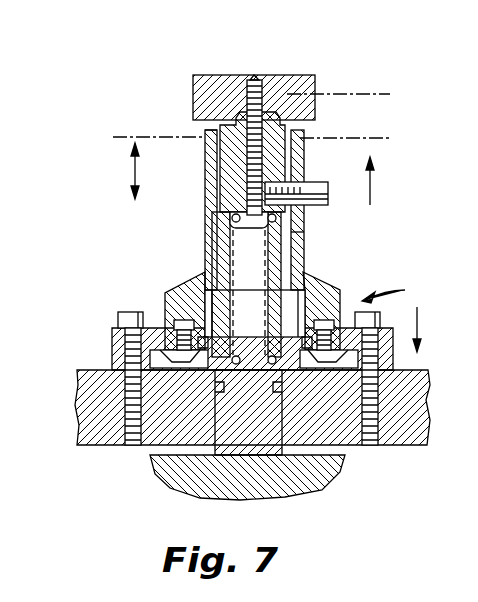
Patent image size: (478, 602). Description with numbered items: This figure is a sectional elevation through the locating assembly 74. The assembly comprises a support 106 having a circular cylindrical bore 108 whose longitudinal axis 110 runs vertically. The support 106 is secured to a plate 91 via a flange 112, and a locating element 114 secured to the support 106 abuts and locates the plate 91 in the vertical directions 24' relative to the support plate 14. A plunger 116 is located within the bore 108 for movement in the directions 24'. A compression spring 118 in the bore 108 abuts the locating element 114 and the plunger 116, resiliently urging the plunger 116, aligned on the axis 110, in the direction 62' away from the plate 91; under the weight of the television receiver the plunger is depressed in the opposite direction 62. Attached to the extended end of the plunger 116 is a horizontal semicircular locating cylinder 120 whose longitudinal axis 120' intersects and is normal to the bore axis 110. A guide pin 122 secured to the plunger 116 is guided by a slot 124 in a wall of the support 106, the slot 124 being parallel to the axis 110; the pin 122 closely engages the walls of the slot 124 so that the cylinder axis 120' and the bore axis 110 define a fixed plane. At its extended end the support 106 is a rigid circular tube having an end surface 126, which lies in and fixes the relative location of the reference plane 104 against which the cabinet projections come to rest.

The support plate 14 is at (150, 462).
The vertical directions 24' is at (117, 171).
The direction 62 is at (431, 329).
The direction 62' is at (391, 181).
The locating assembly 74 is at (416, 280).
The plate 91 is at (402, 440).
The plane 104 is at (382, 137).
The support 106 is at (186, 290).
The circular cylindrical bore 108 is at (301, 157).
The longitudinal axis 110 is at (253, 70).
The flange 112 is at (113, 337).
The locating element 114 is at (280, 416).
The plunger 116 is at (296, 132).
The compression spring 118 is at (232, 212).
The horizontal semicircular locating cylinder 120 is at (232, 97).
The longitudinal axis 120' is at (338, 72).
The guide pin 122 is at (328, 200).
The slot 124 is at (302, 238).
The end surface 126 is at (213, 140).